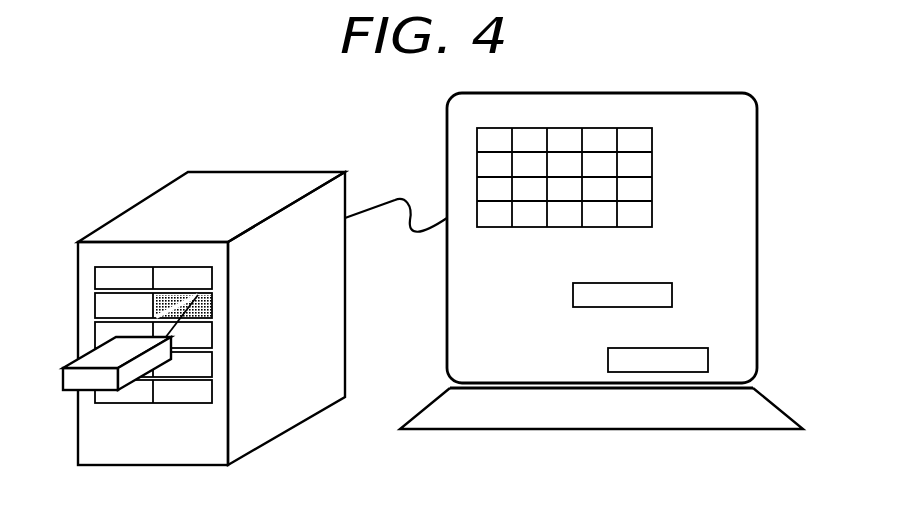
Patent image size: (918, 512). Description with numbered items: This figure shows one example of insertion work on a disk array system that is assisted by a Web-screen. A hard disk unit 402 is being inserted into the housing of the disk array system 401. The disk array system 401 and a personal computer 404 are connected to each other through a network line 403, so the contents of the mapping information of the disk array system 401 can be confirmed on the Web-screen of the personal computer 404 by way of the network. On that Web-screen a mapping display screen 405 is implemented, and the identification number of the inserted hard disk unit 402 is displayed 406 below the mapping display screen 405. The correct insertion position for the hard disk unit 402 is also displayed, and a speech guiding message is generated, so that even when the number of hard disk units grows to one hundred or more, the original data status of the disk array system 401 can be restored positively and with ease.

The disk array system 401 is at (290, 172).
The hard disk unit 402 is at (75, 363).
The network line 403 is at (393, 198).
The personal computer 404 is at (758, 130).
The mapping display screen 405 is at (653, 142).
The identification number display 406 is at (672, 290).